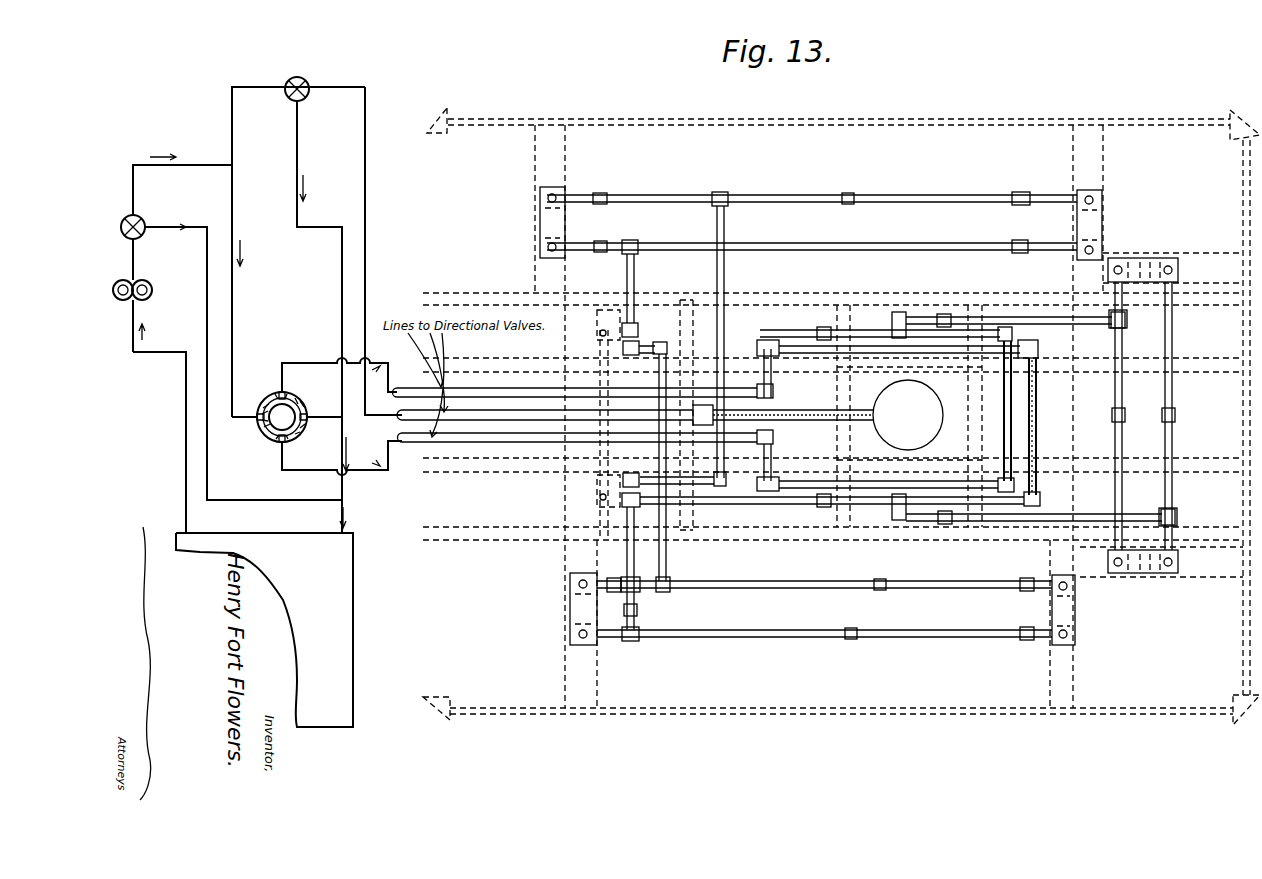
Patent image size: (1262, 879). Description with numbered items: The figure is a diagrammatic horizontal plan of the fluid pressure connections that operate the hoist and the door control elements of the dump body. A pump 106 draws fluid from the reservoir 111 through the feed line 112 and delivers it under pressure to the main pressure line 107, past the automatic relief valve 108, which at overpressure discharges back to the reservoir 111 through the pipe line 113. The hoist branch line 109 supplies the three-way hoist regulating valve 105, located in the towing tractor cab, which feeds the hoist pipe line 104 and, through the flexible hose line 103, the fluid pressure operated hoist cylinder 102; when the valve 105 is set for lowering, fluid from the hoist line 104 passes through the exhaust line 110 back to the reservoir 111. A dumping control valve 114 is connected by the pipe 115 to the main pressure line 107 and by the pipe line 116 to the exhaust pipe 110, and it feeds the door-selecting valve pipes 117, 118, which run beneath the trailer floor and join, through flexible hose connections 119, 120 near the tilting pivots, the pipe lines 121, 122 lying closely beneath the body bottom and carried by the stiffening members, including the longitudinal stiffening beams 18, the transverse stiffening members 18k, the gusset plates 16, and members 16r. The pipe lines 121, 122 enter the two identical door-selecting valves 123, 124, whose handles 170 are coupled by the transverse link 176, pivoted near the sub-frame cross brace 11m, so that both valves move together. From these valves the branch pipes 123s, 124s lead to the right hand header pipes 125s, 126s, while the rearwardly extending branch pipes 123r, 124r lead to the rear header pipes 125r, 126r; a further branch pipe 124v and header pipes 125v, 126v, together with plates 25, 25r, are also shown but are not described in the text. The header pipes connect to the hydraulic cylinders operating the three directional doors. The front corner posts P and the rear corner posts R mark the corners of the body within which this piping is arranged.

The hoist cylinder 102 is at (930, 398).
The flexible hose line 103 is at (805, 408).
The hoist pipe line 104 is at (365, 133).
The three-way hoist regulating valve 105 is at (300, 58).
The pump 106 is at (139, 306).
The main pressure line 107 is at (125, 254).
The automatic relief valve 108 is at (128, 214).
The hoist branch line 109 is at (232, 99).
The exhaust line 110 is at (297, 132).
The reservoir 111 is at (340, 600).
The feed line 112 is at (186, 390).
The pipe line 113 is at (203, 289).
The dumping control valve 114 is at (272, 440).
The pipe 115 is at (236, 287).
The pipe line 116 is at (316, 403).
The door-selecting valve pipe 117 is at (310, 362).
The door-selecting valve pipe 118 is at (491, 443).
The flexible hose connection 119 is at (1038, 430).
The flexible hose connection 120 is at (998, 420).
The pipe line 121 is at (770, 500).
The pipe line 122 is at (868, 330).
The door-selecting valve 123 is at (622, 503).
The door-selecting valve 124 is at (640, 333).
The branch pipe 123s is at (728, 278).
The branch pipe 124s is at (650, 283).
The vertical pipe to lower side pipe 124v is at (668, 555).
The rearwardly extending branch pipe 124r is at (1002, 300).
The rearwardly extending branch pipe 123r is at (1003, 537).
The right hand header pipe 125s is at (800, 194).
The right hand header pipe 126s is at (808, 250).
The lower side pipe 125v is at (804, 590).
The lower side pipe 126v is at (804, 639).
The rear header pipe 125r is at (1174, 392).
The rear header pipe 126r is at (1123, 452).
The handle 170 is at (610, 408).
The transverse link 176 is at (608, 383).
The cross brace 11m is at (690, 300).
The gusset plate 16 is at (568, 165).
The cross member 16r is at (1202, 282).
The stiffening beam 18 is at (466, 293).
The body stiffening member 18k is at (562, 498).
The directional valve plate 25 is at (560, 218).
The directional valve plate 25r is at (1145, 258).
The corner post P is at (442, 108).
The post R is at (1228, 138).